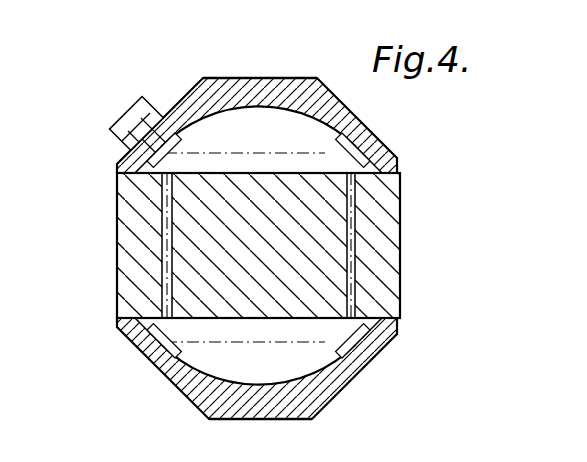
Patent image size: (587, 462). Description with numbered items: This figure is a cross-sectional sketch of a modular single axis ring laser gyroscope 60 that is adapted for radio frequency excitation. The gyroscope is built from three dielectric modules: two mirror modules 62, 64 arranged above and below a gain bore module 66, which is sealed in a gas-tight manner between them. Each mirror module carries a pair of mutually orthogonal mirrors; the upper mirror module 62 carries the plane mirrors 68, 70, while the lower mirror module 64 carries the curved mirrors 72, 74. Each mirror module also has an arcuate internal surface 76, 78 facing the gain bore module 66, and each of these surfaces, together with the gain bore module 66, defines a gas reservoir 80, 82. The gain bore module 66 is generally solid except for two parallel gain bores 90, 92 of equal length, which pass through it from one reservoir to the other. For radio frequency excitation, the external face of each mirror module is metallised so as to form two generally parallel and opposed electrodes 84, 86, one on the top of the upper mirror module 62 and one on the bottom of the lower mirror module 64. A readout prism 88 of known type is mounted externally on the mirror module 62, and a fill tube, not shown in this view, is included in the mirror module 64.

The ring laser gyroscope 60 is at (126, 84).
The mirror module 62 is at (255, 102).
The mirror module 64 is at (248, 382).
The gain bore module 66 is at (236, 245).
The mirror 68 is at (145, 152).
The mirror 70 is at (362, 153).
The mirror 72 is at (156, 339).
The mirror 74 is at (354, 343).
The arcuate internal surface 76 is at (302, 119).
The arcuate internal surface 78 is at (258, 381).
The gas reservoir 80 is at (243, 142).
The gas reservoir 82 is at (243, 369).
The electrode 84 is at (254, 76).
The electrode 86 is at (215, 420).
The readout prism 88 is at (120, 130).
The gain bore 90 is at (162, 210).
The gain bore 92 is at (350, 238).